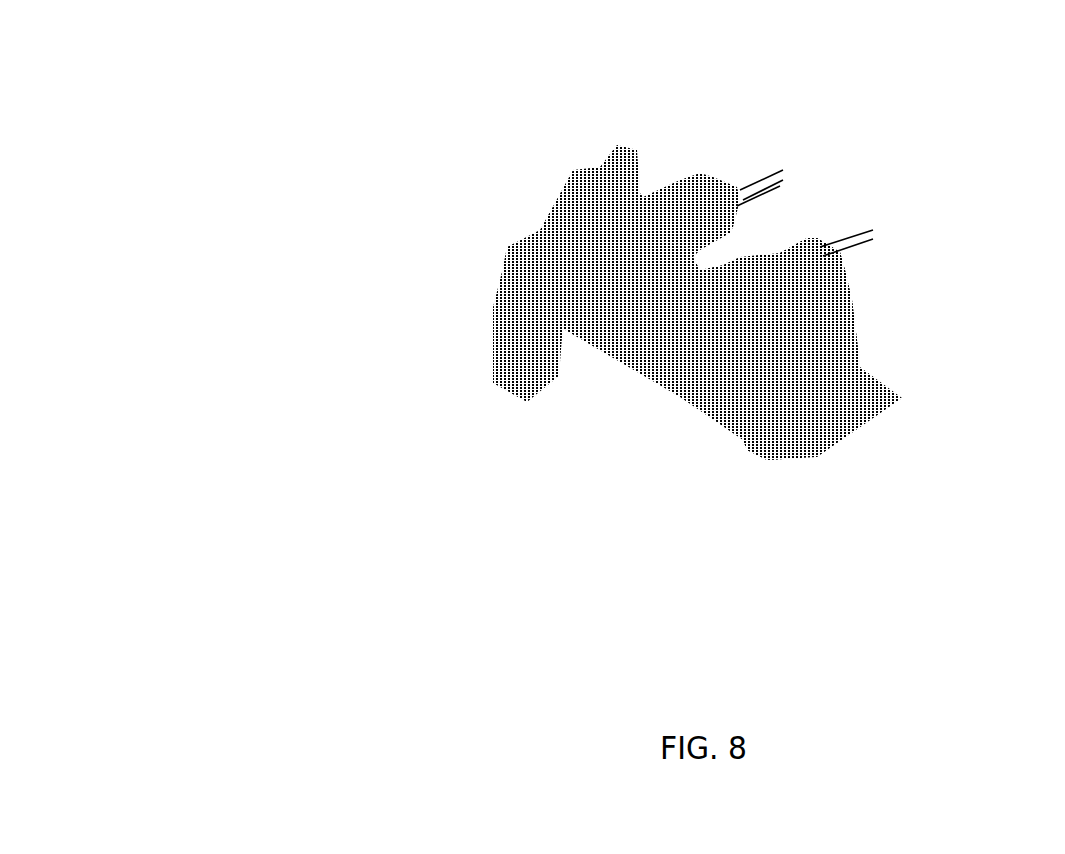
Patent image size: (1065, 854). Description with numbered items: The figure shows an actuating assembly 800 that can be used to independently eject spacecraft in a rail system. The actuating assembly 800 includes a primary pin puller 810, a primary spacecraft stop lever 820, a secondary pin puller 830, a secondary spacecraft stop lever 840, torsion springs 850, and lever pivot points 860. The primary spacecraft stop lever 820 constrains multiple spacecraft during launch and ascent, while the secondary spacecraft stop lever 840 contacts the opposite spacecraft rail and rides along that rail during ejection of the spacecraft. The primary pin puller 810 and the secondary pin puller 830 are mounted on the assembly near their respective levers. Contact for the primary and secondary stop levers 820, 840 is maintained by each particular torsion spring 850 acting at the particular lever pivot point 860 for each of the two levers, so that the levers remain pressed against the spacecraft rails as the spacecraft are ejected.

The actuating assembly 800 is at (318, 95).
The primary pin puller 810 is at (727, 183).
The primary spacecraft stop lever 820 is at (497, 343).
The secondary pin puller 830 is at (813, 250).
The secondary spacecraft stop lever 840 is at (772, 457).
The torsion springs 850 is at (518, 250).
The lever pivot points 860 is at (721, 302).